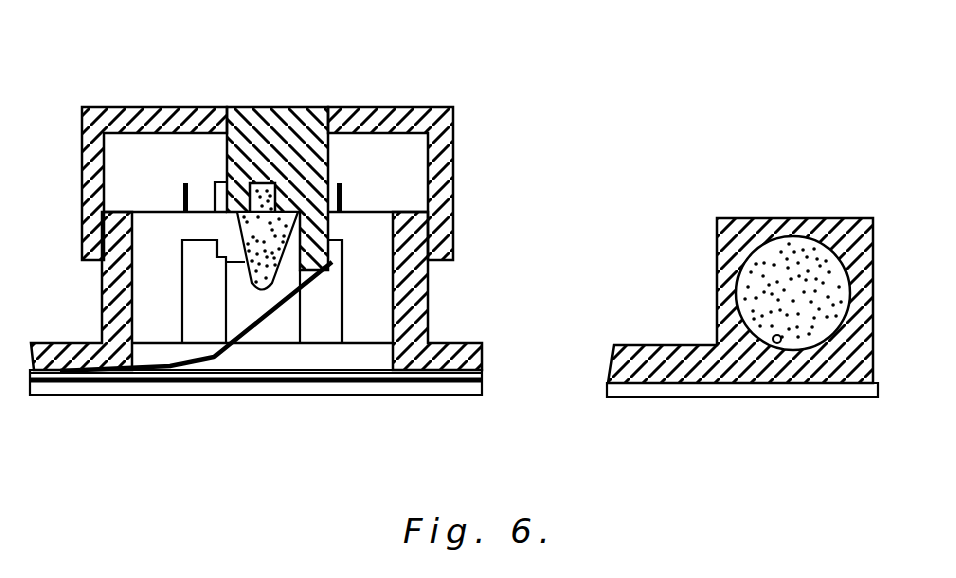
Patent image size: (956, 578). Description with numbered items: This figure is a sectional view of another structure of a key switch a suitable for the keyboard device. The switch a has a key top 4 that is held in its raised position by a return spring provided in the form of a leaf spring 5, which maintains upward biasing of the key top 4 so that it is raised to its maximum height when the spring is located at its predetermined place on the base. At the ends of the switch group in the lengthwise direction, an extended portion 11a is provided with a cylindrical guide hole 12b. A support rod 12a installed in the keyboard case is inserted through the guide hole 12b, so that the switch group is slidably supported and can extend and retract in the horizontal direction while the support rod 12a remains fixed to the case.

The switch a is at (300, 107).
The key top 4 is at (424, 107).
The leaf spring 5 is at (262, 338).
The extended portion 11a is at (677, 357).
The support rod 12a is at (798, 257).
The guide hole 12b is at (775, 345).